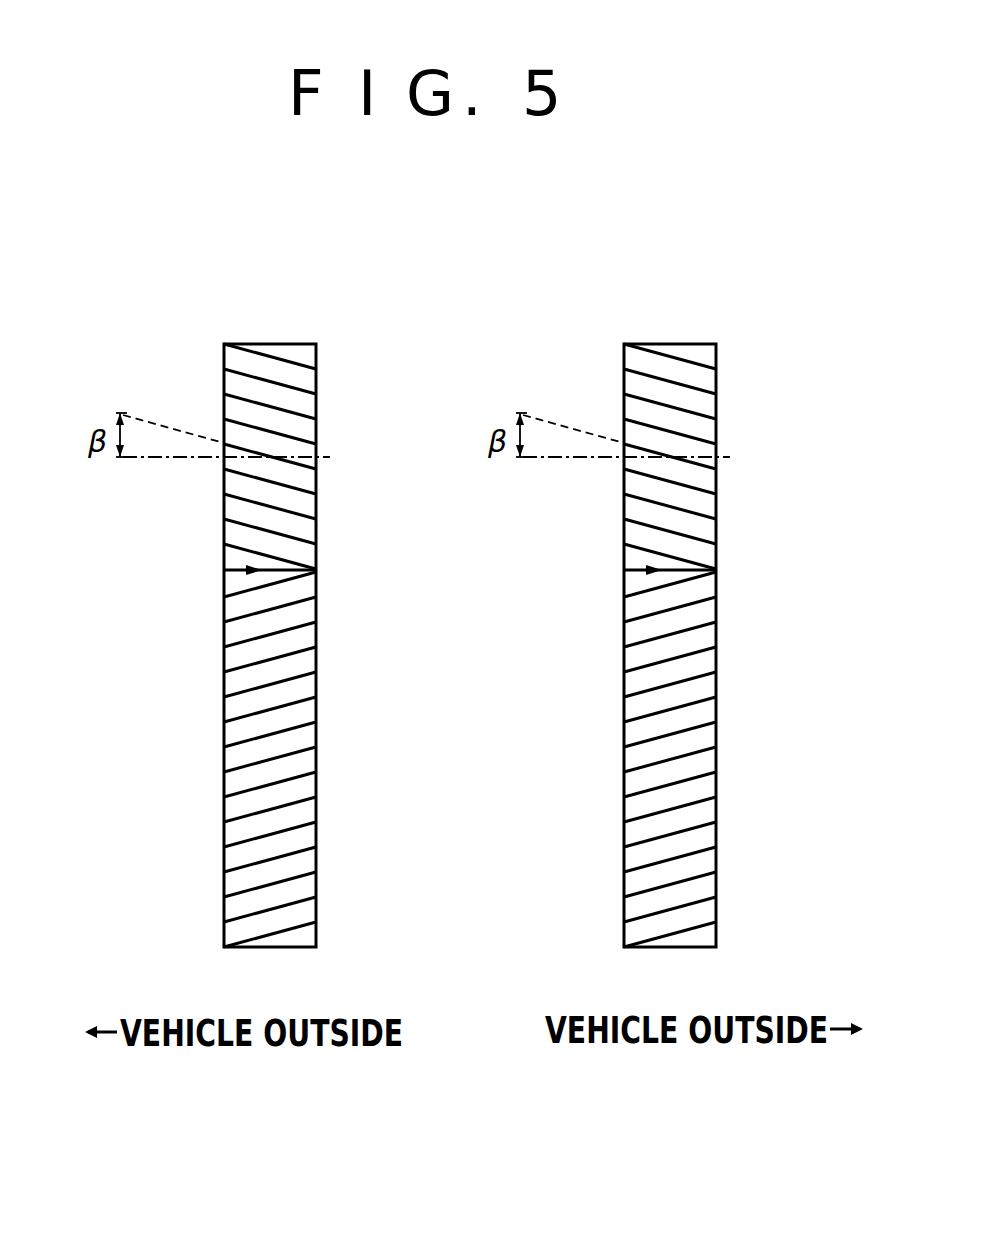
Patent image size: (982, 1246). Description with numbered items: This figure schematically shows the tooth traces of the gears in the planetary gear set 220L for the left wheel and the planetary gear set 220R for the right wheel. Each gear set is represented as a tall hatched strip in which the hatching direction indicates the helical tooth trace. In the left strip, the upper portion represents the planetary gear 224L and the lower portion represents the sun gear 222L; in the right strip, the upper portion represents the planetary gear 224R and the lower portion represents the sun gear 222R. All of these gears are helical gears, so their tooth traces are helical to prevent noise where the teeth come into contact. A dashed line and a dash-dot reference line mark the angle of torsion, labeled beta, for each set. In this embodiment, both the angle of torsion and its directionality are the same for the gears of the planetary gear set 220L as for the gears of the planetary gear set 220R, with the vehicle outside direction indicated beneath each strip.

The planetary gear set for the left wheel 220L is at (194, 589).
The planetary gear 224L is at (186, 512).
The sun gear 222L is at (186, 684).
The planetary gear set for the right wheel 220R is at (598, 589).
The planetary gear 224R is at (586, 511).
The sun gear 222R is at (588, 684).